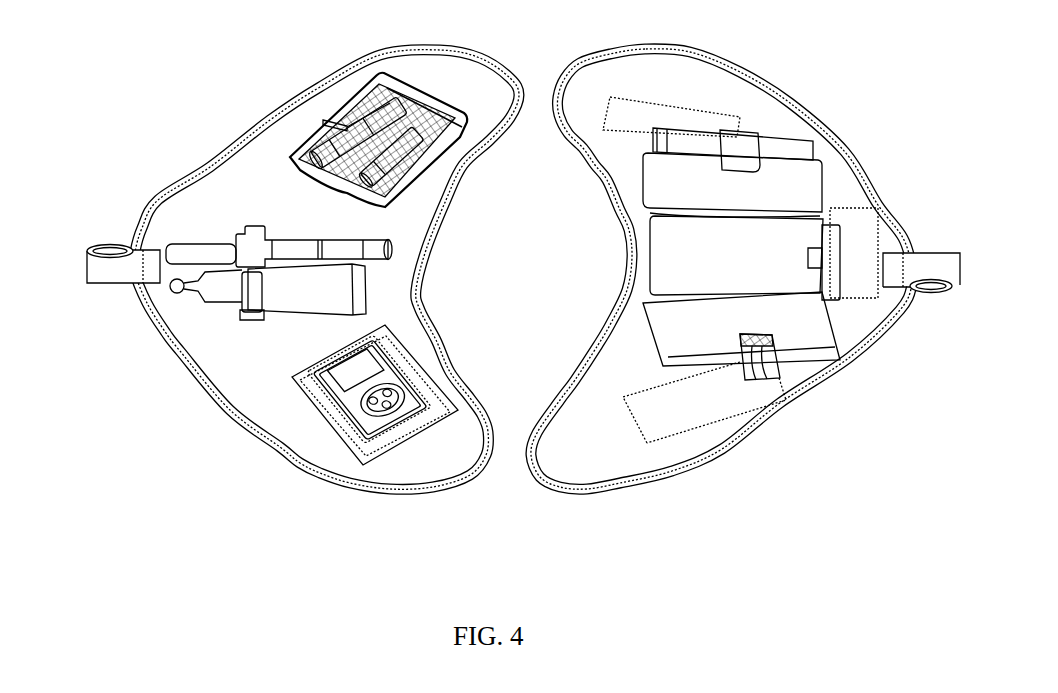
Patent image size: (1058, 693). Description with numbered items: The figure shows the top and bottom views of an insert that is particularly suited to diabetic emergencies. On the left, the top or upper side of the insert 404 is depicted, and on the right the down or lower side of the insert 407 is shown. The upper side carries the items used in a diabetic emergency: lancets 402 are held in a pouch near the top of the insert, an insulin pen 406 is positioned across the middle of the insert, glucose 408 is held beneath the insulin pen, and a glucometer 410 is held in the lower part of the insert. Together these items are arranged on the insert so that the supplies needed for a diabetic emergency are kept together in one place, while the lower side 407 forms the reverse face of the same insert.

The lancets 402 is at (358, 117).
The top side of insert 404 is at (212, 185).
The insulin pen 406 is at (170, 236).
The glucose 408 is at (200, 303).
The glucometer 410 is at (343, 403).
The bottom side of insert 407 is at (847, 172).